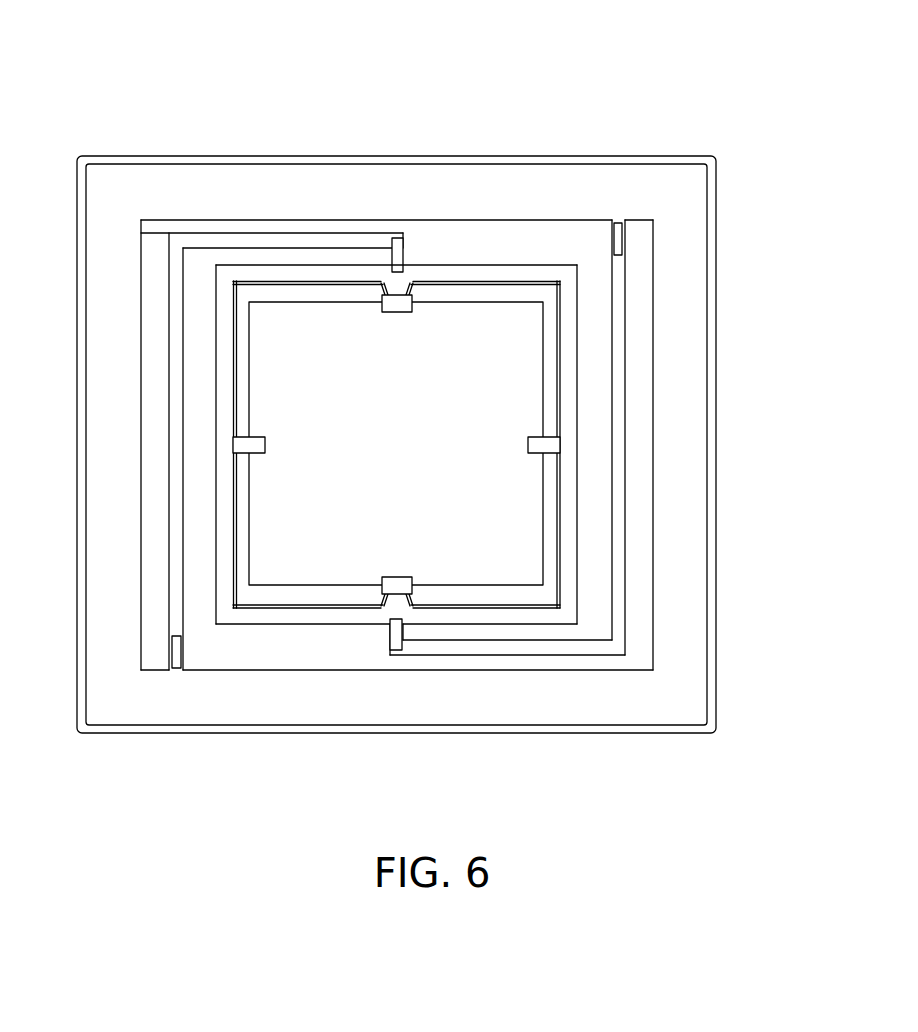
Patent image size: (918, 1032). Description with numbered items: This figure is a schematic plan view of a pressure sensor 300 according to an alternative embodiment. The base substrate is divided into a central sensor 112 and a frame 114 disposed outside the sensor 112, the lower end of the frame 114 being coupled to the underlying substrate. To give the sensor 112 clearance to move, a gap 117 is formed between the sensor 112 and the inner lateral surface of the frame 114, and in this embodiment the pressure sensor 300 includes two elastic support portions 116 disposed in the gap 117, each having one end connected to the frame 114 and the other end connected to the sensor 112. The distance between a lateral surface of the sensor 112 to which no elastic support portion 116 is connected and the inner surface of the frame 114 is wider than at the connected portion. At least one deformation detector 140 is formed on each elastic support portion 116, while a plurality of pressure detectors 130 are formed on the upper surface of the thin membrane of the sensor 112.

The pressure sensor 300 is at (374, 52).
The sensor 112 is at (568, 512).
The frame 114 is at (683, 693).
The elastic support portion 116 is at (615, 613).
The gap 117 is at (273, 647).
The pressure detector 130 is at (403, 300).
The deformation detector 140 is at (618, 222).